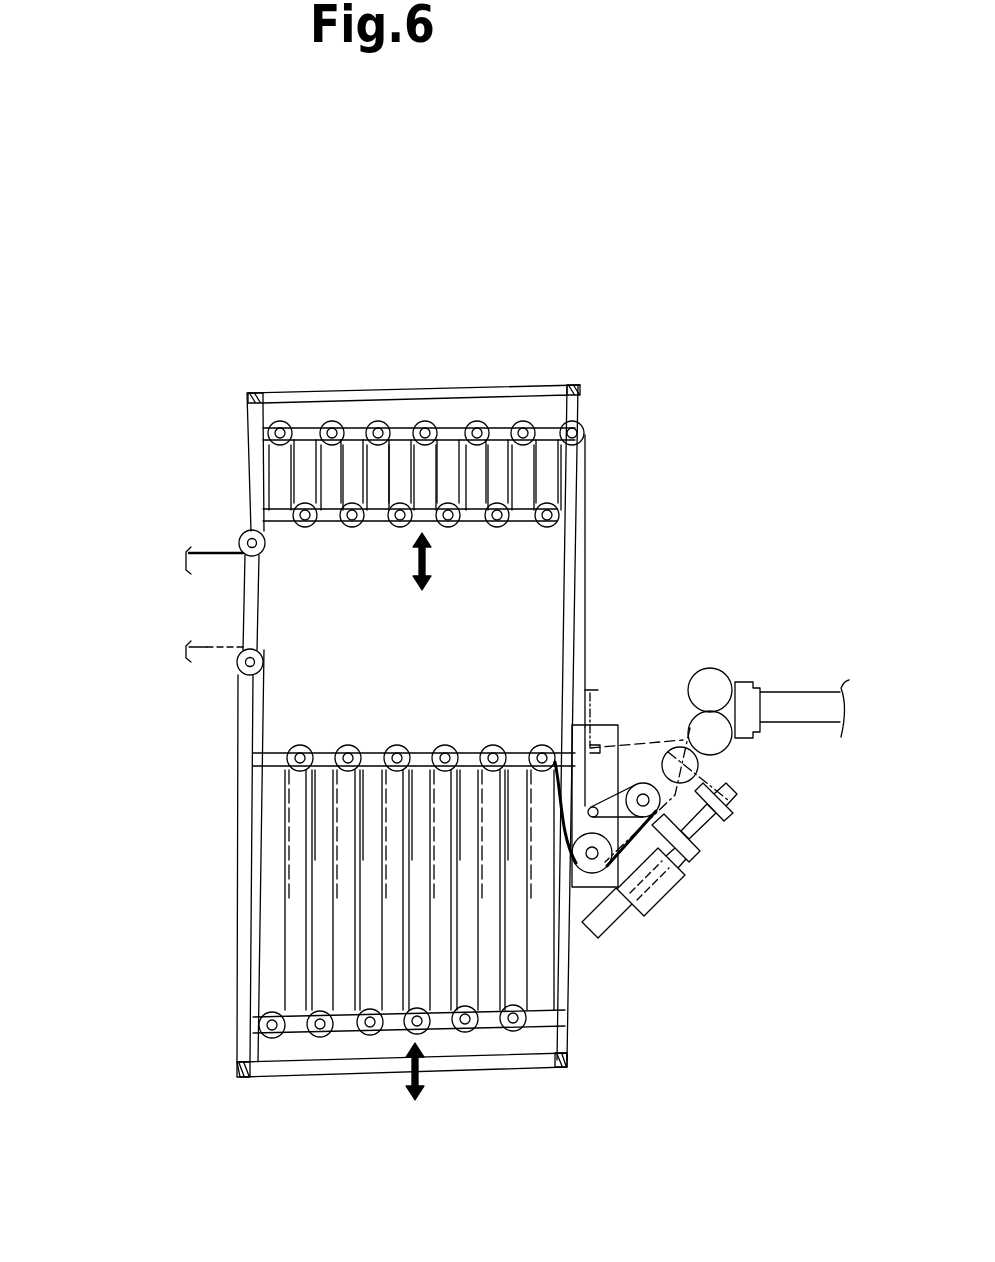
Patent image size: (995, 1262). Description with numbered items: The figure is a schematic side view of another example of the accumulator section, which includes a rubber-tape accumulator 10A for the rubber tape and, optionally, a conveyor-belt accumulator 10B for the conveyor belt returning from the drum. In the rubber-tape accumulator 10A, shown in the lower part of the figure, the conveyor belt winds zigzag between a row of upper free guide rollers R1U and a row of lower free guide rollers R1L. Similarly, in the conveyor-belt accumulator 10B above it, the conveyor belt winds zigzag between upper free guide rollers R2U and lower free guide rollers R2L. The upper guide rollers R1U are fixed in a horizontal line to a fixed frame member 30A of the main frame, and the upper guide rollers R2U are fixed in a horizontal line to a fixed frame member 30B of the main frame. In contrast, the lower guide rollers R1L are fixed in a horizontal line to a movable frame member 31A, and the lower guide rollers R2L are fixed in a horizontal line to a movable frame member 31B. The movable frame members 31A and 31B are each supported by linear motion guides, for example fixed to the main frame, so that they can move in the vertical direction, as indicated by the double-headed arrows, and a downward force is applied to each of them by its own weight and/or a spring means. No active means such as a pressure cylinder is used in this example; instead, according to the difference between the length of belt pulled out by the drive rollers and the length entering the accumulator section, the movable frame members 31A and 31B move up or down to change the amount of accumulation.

The rubber-tape accumulator 10A is at (200, 980).
The conveyor-belt accumulator 10B is at (211, 464).
The fixed frame member 30A is at (278, 772).
The fixed frame member 30B is at (457, 426).
The movable frame member 31A is at (298, 1034).
The movable frame member 31B is at (528, 522).
The upper free guide rollers R1U is at (338, 748).
The lower free guide rollers R1L is at (320, 1037).
The upper free guide rollers R2U is at (478, 421).
The lower free guide rollers R2L is at (506, 506).